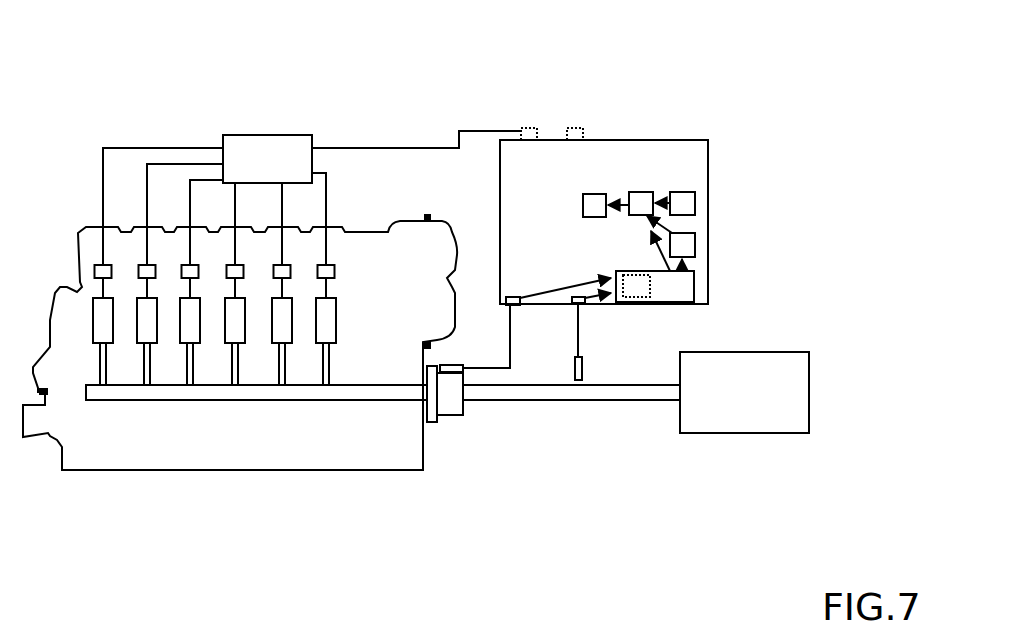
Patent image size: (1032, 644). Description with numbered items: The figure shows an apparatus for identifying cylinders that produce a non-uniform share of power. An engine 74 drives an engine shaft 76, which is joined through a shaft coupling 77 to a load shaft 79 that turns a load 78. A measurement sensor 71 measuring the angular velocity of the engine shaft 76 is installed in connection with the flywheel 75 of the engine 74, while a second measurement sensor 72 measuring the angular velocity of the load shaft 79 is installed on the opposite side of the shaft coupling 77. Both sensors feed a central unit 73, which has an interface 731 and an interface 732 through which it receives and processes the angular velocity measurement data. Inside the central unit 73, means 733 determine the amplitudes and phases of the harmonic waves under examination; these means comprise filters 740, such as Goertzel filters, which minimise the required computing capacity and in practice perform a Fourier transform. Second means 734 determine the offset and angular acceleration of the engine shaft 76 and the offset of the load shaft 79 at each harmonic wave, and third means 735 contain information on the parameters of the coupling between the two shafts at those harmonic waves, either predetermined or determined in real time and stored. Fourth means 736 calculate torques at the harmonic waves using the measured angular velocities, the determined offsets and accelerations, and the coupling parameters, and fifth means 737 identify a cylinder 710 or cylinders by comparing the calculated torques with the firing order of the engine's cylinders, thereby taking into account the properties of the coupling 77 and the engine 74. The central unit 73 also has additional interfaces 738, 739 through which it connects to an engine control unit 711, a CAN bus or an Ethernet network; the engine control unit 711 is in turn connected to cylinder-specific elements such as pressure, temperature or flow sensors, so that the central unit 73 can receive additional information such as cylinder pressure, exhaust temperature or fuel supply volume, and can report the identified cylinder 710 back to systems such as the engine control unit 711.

The central unit 73 is at (680, 94).
The engine 74 is at (250, 478).
The flywheel 75 is at (437, 420).
The engine shaft 76 is at (362, 383).
The shaft coupling 77 is at (463, 407).
The load 78 is at (727, 352).
The load shaft 79 is at (598, 400).
The measurement sensor 71 is at (450, 365).
The measurement sensor 72 is at (582, 365).
The cylinder 710 is at (338, 310).
The engine control unit 711 is at (267, 135).
The interface 731 is at (520, 305).
The interface 732 is at (603, 306).
The means for determining amplitudes and phases 733 is at (694, 283).
The second means 734 is at (686, 243).
The third means 735 is at (695, 202).
The fourth means 736 is at (651, 192).
The fifth means 737 is at (593, 193).
The additional interface 738 is at (536, 130).
The additional interface 739 is at (584, 130).
The filters 740 is at (631, 271).